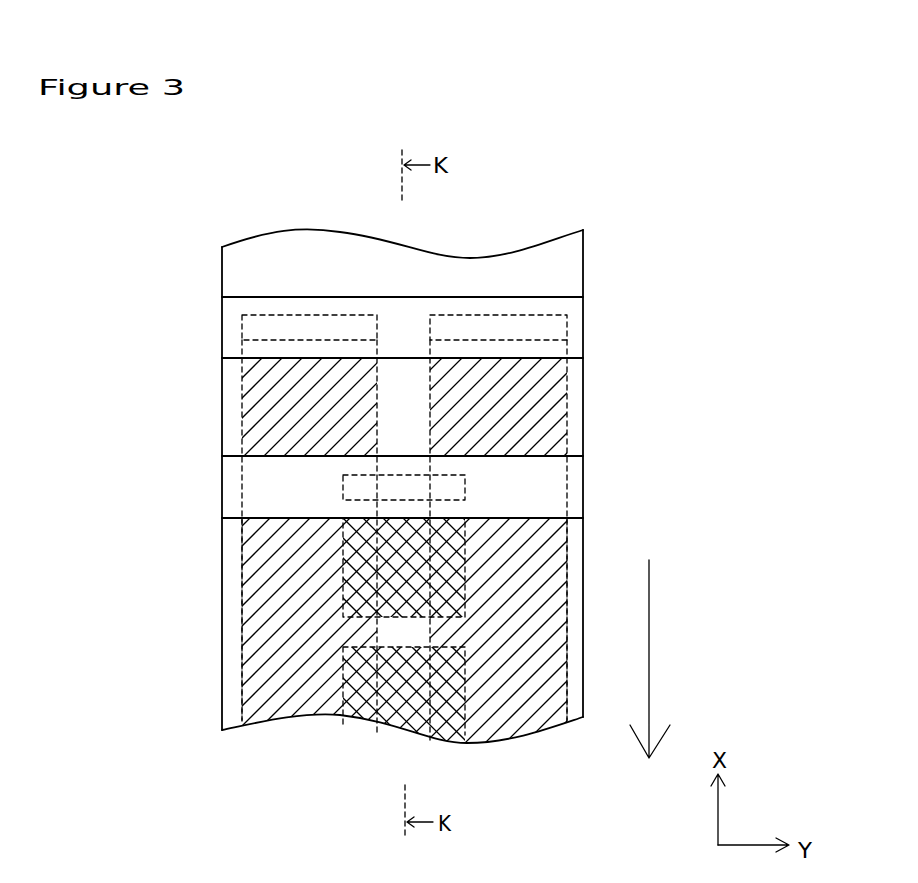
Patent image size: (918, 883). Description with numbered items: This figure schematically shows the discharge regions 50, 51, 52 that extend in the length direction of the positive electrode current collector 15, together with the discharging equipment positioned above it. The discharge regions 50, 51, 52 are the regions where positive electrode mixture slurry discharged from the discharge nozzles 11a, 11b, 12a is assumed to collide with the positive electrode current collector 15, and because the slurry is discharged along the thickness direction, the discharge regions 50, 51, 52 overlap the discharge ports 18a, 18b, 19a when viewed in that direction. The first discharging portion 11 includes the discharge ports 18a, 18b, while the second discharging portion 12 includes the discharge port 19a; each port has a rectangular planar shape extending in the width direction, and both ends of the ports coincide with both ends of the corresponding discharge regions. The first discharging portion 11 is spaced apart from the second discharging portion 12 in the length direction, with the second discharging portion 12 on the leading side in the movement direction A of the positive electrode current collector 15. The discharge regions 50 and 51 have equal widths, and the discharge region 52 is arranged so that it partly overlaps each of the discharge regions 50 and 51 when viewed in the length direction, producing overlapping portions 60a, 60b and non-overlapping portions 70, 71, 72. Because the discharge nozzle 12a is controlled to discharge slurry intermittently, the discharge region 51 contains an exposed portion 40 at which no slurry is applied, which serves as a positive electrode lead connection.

The first discharging portion 11 is at (573, 317).
The discharge nozzle 11a is at (292, 306).
The discharge nozzle 11b is at (502, 306).
The second discharging portion 12 is at (575, 487).
The discharge nozzle 12a is at (397, 452).
The positive electrode current collector 15 is at (407, 408).
The discharge port 18a is at (277, 315).
The discharge port 18b is at (533, 315).
The discharge port 19a is at (403, 475).
The exposed portion 40 is at (400, 635).
The discharge region 50 is at (255, 550).
The discharge region 51 is at (553, 546).
The discharge region 52 is at (400, 537).
The overlapping portion 60a is at (392, 700).
The overlapping portion 60b is at (400, 700).
The non-overlapping portion 70 is at (265, 592).
The non-overlapping portion 71 is at (542, 712).
The non-overlapping portion 72 is at (410, 588).
The movement direction A is at (651, 642).